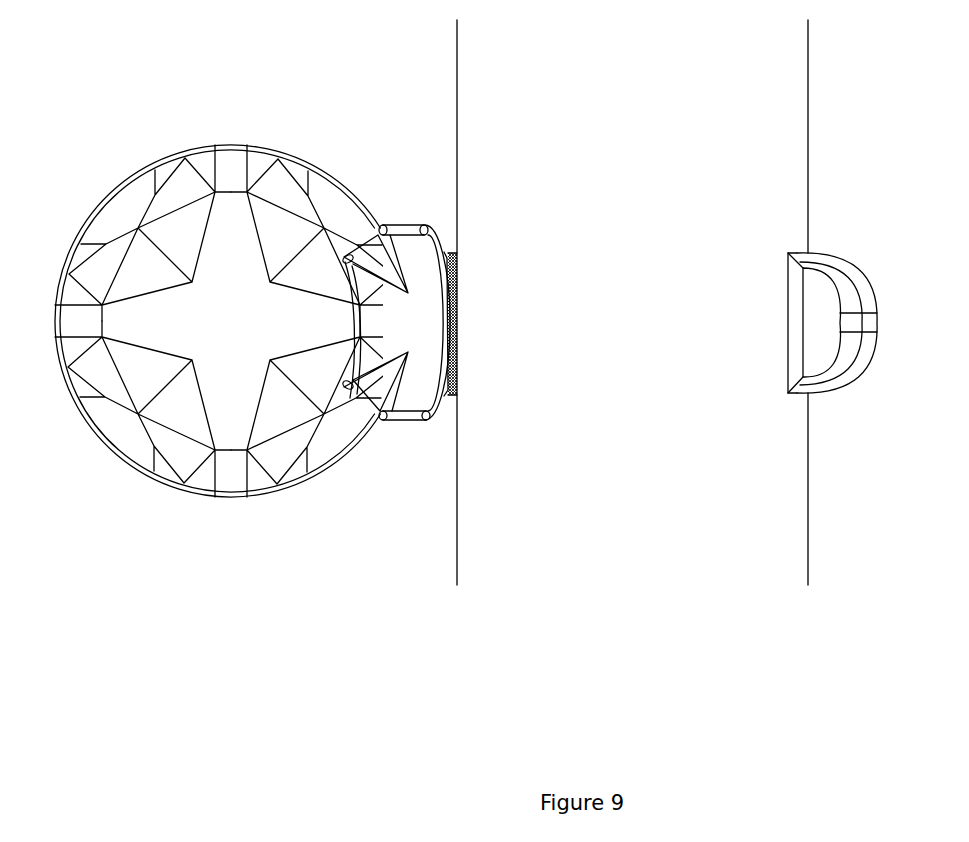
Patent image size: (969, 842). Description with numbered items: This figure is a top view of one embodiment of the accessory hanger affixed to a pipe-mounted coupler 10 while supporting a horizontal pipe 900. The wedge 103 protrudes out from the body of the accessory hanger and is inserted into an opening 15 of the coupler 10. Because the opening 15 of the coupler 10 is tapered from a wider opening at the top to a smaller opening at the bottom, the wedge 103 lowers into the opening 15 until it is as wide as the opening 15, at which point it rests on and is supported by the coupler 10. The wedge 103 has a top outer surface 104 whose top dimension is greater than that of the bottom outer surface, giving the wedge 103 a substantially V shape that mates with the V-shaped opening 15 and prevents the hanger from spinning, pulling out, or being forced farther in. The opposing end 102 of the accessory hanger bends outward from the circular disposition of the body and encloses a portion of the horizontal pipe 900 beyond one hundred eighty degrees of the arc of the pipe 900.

The coupler 10 is at (235, 476).
The opening 15 is at (390, 245).
The wedge 103 is at (357, 320).
The top outer surface 104 is at (392, 322).
The horizontal pipe 900 is at (765, 137).
The opposing end 102 is at (820, 332).